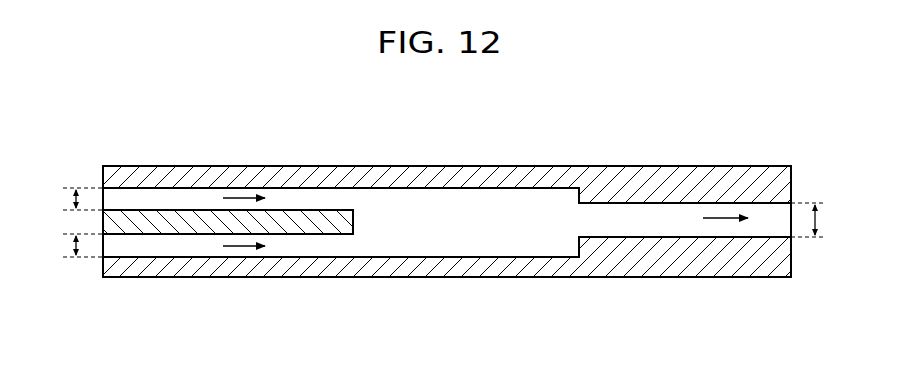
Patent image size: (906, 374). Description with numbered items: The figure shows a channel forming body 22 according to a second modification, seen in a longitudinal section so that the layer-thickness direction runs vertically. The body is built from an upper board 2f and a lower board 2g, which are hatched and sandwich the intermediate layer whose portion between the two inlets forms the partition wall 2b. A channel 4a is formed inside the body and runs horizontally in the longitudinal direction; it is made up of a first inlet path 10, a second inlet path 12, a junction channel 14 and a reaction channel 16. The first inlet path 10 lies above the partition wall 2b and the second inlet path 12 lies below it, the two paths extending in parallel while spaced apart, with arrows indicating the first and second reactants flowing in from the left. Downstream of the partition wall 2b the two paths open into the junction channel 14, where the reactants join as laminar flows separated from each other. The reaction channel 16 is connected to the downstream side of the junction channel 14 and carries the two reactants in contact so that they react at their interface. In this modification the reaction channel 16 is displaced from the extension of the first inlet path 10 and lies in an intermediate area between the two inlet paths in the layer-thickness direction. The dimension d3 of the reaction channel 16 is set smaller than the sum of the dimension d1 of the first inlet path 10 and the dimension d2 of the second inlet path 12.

The channel forming body 22 is at (447, 215).
The upper board 2f is at (540, 166).
The lower board 2g is at (543, 278).
The partition wall 2b is at (287, 225).
The first inlet path 10 is at (135, 200).
The second inlet path 12 is at (148, 245).
The junction channel 14 is at (447, 225).
The reaction channel 16 is at (673, 222).
The channel 4a is at (473, 208).
The dimension of the first inlet path in the layer-thickness direction d1 is at (67, 199).
The dimension of the second inlet path in the layer-thickness direction d2 is at (67, 246).
The dimension of the reaction channel in the layer-thickness direction d3 is at (823, 220).